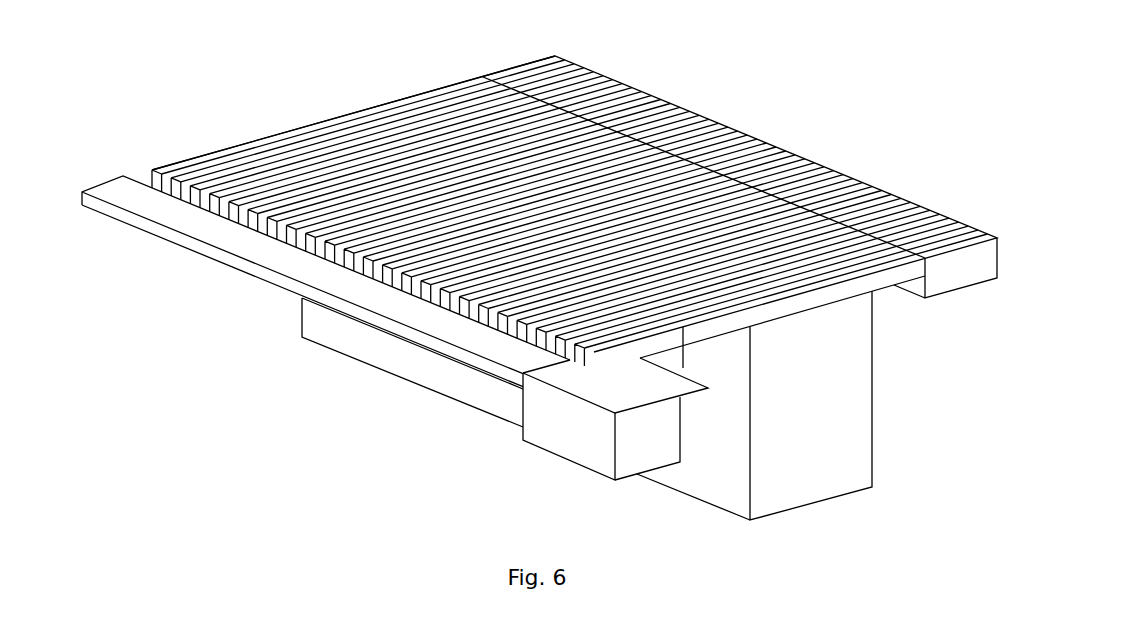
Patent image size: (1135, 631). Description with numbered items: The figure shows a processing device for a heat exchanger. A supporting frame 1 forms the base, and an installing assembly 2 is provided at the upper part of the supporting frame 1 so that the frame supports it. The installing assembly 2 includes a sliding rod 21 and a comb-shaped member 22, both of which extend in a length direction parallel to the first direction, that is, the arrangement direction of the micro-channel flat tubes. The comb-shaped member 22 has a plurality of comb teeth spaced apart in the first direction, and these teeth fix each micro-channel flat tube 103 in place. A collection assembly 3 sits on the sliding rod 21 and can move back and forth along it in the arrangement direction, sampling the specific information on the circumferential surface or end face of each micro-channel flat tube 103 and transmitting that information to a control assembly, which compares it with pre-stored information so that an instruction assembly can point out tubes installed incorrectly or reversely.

The supporting frame 1 is at (862, 398).
The installing assembly 2 is at (112, 281).
The sliding rod 21 is at (235, 258).
The comb-shaped member 22 is at (525, 67).
The micro-channel flat tube 103 is at (380, 110).
The collection assembly 3 is at (580, 450).